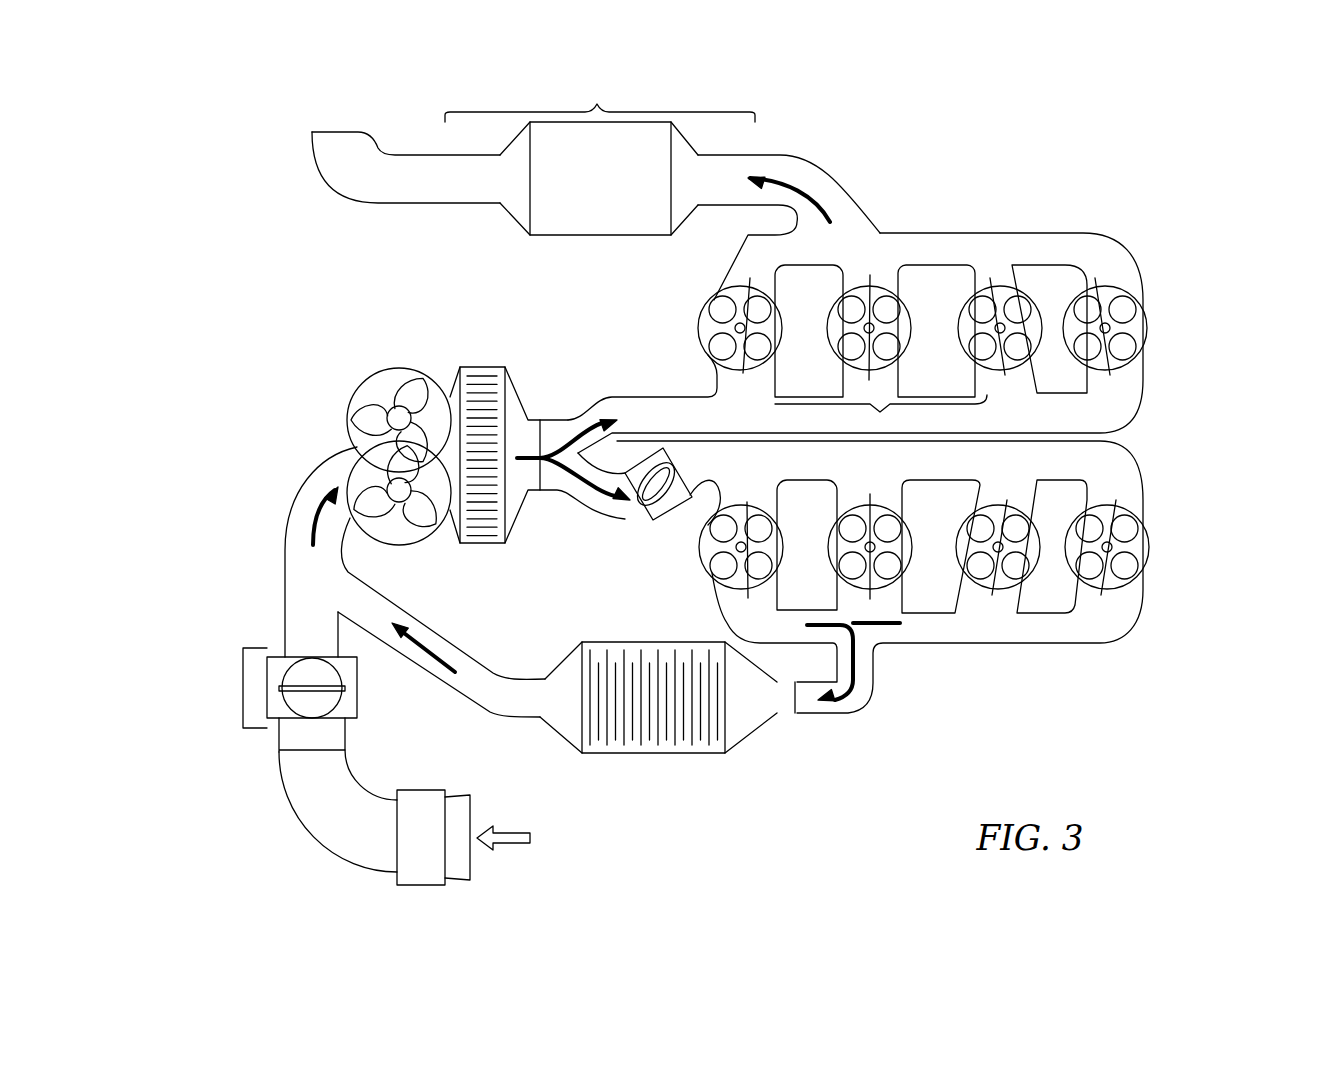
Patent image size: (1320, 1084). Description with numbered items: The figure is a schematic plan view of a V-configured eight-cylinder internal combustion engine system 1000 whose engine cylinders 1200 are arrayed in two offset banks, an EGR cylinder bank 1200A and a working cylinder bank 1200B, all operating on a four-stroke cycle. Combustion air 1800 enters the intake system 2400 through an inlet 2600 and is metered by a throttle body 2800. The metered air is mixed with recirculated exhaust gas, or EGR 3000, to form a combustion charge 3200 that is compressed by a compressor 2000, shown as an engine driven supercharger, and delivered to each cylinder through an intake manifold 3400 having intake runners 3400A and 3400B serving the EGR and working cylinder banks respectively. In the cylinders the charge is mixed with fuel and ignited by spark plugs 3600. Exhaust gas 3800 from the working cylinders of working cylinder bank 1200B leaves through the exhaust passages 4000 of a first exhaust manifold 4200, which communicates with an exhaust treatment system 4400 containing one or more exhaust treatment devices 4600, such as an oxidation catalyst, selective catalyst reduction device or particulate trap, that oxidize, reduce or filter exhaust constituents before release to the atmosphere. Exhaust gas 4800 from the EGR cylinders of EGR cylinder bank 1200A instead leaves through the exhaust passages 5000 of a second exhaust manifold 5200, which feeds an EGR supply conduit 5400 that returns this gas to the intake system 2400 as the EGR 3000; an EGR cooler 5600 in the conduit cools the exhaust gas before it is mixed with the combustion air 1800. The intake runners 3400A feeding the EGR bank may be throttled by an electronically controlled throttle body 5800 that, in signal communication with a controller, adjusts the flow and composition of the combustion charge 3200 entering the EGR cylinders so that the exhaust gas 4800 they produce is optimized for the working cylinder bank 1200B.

The internal combustion engine system 1000 is at (1147, 450).
The engine cylinders 1200 is at (1145, 298).
The EGR cylinder bank 1200A is at (1150, 553).
The working cylinder bank 1200B is at (1147, 328).
The combustion air 1800 is at (505, 832).
The compressor 2000 is at (357, 380).
The intake system 2400 is at (276, 590).
The inlet 2600 is at (465, 848).
The throttle body 2800 is at (247, 688).
The recirculated exhaust gas (EGR) 3000 is at (433, 648).
The combustion charge 3200 is at (292, 522).
The intake manifold 3400 is at (525, 370).
The intake runners 3400A is at (987, 473).
The intake runners 3400B is at (777, 396).
The spark plugs 3600 is at (1118, 560).
The exhaust gas 3800 is at (808, 190).
The exhaust passages 4000 is at (977, 265).
The first exhaust manifold 4200 is at (1053, 228).
The exhaust treatment system 4400 is at (571, 100).
The exhaust treatment devices 4600 is at (574, 185).
The exhaust gas 4800 is at (873, 687).
The exhaust passages 5000 is at (1073, 603).
The second exhaust manifold 5200 is at (970, 647).
The EGR supply conduit 5400 is at (450, 687).
The EGR cooler 5600 is at (650, 755).
The throttle body 5800 is at (677, 520).